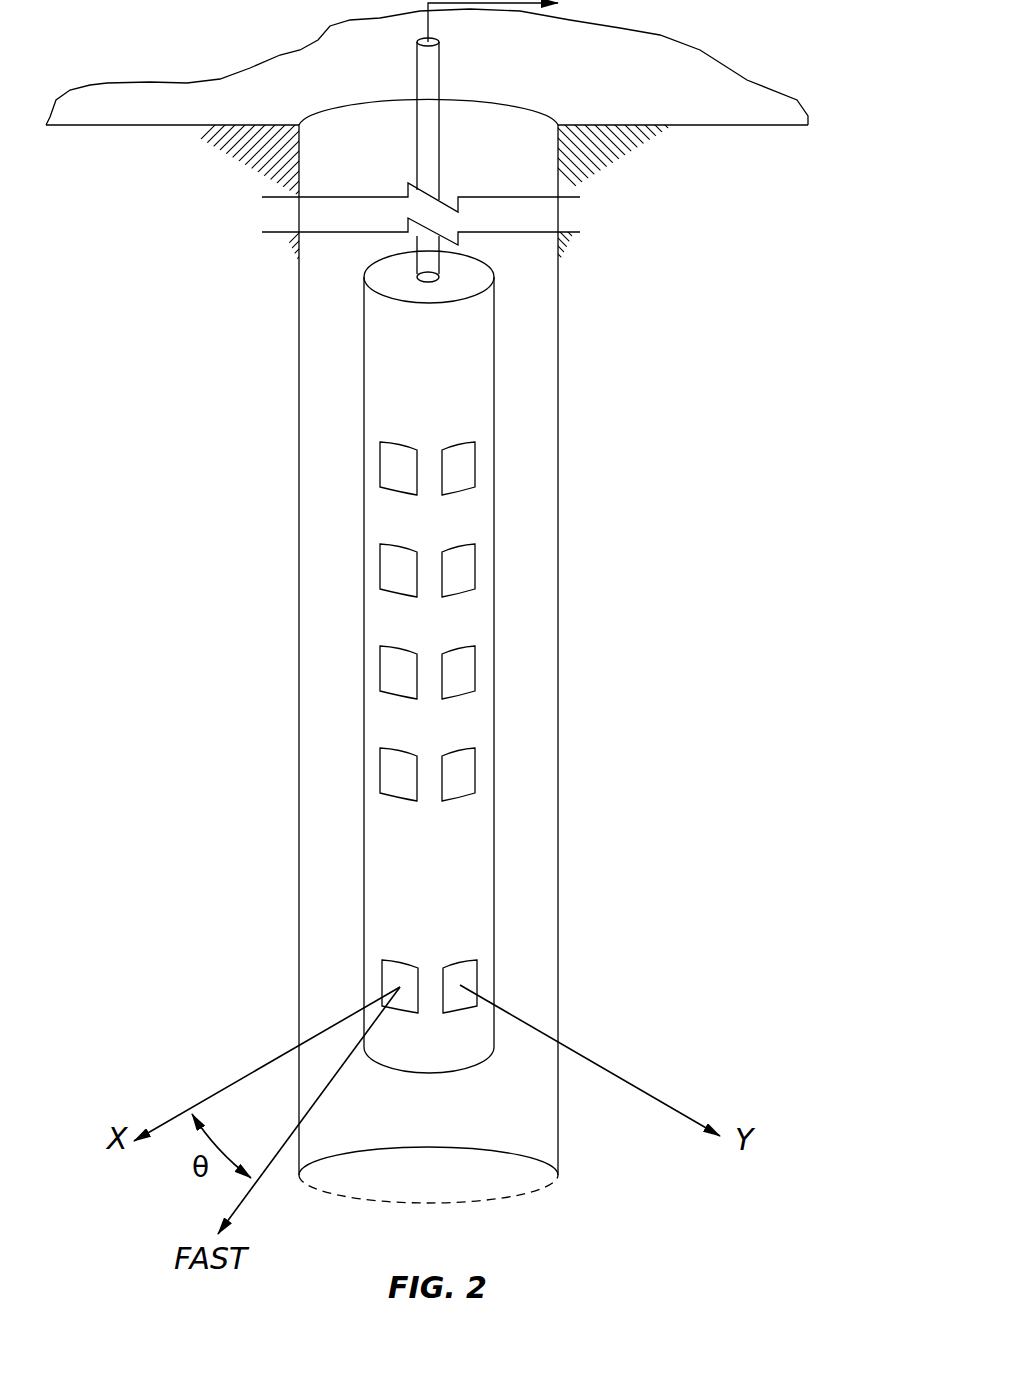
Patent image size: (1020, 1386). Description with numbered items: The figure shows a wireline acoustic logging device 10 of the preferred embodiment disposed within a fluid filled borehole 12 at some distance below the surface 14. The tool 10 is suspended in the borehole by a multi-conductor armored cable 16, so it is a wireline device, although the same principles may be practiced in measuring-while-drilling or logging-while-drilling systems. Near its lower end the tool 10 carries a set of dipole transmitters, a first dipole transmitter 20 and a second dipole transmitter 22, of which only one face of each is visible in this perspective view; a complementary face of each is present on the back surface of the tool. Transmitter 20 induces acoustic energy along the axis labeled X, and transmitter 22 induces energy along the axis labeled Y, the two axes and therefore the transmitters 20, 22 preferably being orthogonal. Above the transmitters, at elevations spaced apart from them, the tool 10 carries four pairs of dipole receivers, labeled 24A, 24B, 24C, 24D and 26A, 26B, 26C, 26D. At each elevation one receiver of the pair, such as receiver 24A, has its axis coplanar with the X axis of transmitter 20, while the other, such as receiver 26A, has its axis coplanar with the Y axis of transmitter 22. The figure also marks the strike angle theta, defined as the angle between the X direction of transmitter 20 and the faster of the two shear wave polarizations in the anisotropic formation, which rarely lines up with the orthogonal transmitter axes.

The acoustic logging device 10 is at (358, 377).
The fluid filled borehole 12 is at (558, 457).
The surface 14 is at (663, 35).
The multi-conductor armored cable 16 is at (427, 258).
The first dipole transmitter 20 is at (402, 983).
The second dipole transmitter 22 is at (460, 985).
The dipole receiver 24A is at (398, 776).
The dipole receiver 24B is at (398, 674).
The dipole receiver 24C is at (398, 572).
The dipole receiver 24D is at (398, 470).
The dipole receiver 26A is at (458, 776).
The dipole receiver 26B is at (458, 674).
The dipole receiver 26C is at (458, 572).
The dipole receiver 26D is at (458, 470).